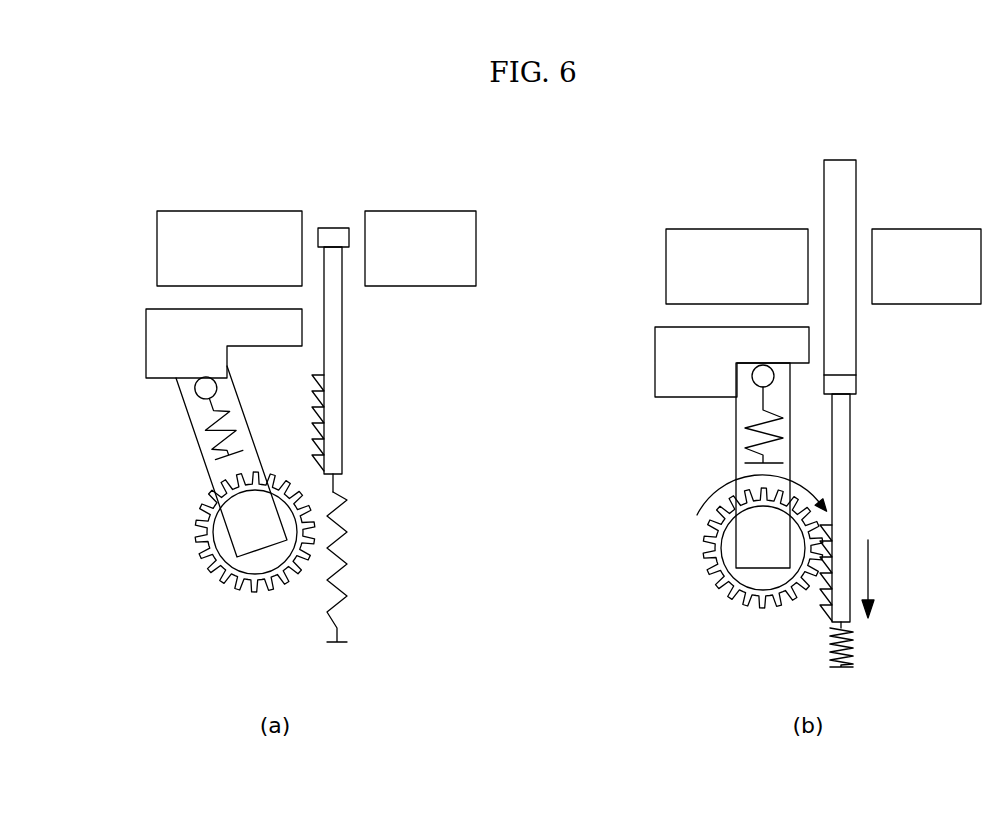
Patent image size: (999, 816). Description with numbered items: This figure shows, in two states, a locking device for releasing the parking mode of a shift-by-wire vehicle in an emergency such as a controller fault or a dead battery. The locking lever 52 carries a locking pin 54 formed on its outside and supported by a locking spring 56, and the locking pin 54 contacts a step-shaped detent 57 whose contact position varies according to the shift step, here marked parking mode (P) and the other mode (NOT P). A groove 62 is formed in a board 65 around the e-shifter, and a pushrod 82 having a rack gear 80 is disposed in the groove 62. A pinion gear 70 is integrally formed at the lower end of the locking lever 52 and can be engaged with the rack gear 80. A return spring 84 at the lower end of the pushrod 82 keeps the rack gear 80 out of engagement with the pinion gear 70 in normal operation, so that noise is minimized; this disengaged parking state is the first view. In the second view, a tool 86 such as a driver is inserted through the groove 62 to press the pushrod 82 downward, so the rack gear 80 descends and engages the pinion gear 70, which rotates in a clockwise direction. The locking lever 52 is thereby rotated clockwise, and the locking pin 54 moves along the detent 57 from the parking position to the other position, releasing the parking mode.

The locking lever 52 is at (217, 476).
The locking pin 54 is at (195, 392).
The locking spring 56 is at (200, 436).
The detent 57 is at (146, 342).
The groove 62 is at (333, 198).
The board 65 is at (222, 211).
The pinion gear 70 is at (200, 556).
The rack gear 80 is at (312, 408).
The pushrod 82 is at (342, 343).
The return spring 84 is at (347, 545).
The tool 86 is at (856, 337).